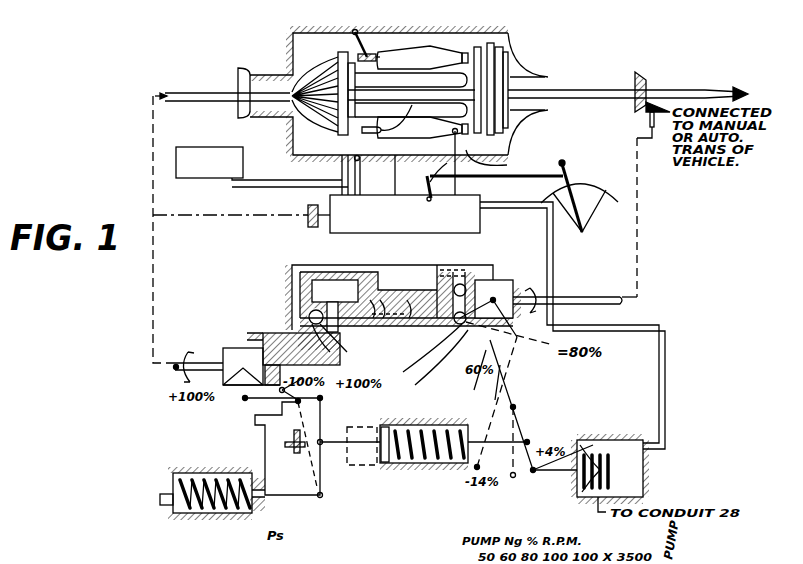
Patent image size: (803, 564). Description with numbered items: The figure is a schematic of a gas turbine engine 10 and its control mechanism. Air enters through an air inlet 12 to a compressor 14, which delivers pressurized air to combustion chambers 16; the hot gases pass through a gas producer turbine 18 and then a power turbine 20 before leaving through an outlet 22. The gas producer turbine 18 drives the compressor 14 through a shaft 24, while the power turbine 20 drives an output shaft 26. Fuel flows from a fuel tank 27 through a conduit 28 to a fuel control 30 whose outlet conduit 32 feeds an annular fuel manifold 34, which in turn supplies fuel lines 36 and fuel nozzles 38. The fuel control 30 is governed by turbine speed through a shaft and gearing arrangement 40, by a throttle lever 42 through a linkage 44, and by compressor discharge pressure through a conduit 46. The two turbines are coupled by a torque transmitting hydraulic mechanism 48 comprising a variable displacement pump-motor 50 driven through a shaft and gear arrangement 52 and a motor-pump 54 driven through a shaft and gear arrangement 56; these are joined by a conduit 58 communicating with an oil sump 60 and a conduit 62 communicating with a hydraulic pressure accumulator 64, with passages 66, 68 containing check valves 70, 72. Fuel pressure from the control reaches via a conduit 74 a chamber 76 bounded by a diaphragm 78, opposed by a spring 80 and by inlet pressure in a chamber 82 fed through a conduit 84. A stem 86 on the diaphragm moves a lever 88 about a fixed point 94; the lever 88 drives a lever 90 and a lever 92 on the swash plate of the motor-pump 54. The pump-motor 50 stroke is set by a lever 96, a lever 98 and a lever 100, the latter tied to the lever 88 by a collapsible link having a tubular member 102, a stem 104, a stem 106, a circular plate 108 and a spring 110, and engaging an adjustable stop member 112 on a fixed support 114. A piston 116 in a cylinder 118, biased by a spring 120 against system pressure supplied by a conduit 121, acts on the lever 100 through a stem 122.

The gas turbine engine 10 is at (286, 57).
The air inlet 12 is at (240, 90).
The compressor 14 is at (320, 85).
The combustion chambers 16 is at (418, 55).
The gas producer turbine 18 is at (493, 155).
The power turbine 20 is at (507, 140).
The outlet 22 is at (530, 80).
The shaft 24 is at (381, 132).
The shaft 26 is at (581, 98).
The fuel tank 27 is at (216, 147).
The conduit 28 is at (263, 180).
The fuel control 30 is at (392, 235).
The outlet conduit 32 is at (361, 181).
The annular fuel manifold 34 is at (355, 159).
The ignition lever 36 is at (369, 55).
The fuel nozzles 38 is at (381, 55).
The shaft and gearing arrangement 40 is at (153, 200).
The throttle lever 42 is at (572, 183).
The linkage 44 is at (521, 180).
The conduit 46 is at (458, 180).
The torque transmitting hydraulic mechanism 48 is at (216, 352).
The variable displacement hydraulic pump-motor 50 is at (228, 347).
The shaft and gear arrangement 52 is at (154, 282).
The hydraulic motor-pump 54 is at (500, 279).
The shaft and gear arrangement 56 is at (639, 235).
The conduit 58 is at (317, 265).
The oil sump 60 is at (405, 265).
The conduit 62 is at (412, 320).
The hydraulic pressure accumulator 64 is at (375, 320).
The passage 66 is at (336, 347).
The passage 68 is at (455, 280).
The check valve 70 is at (293, 337).
The check valve 72 is at (455, 324).
The conduit 74 is at (500, 265).
The chamber 76 is at (644, 474).
The diaphragm 78 is at (644, 496).
The spring 80 is at (592, 448).
The chamber 82 is at (573, 497).
The conduit 84 is at (593, 512).
The stem 86 is at (578, 483).
The lever 88 is at (525, 428).
The lever 90 is at (493, 361).
The lever 92 is at (435, 354).
The fixed point 94 is at (520, 408).
The lever 96 is at (243, 392).
The lever 98 is at (303, 398).
The lever 100 is at (320, 415).
The tubular member 102 is at (412, 464).
The stem 104 is at (478, 435).
The stem 106 is at (340, 470).
The circular plate 108 is at (385, 425).
The spring 110 is at (440, 428).
The adjustable stop member 112 is at (301, 445).
The fixed support 114 is at (293, 436).
The piston 116 is at (257, 514).
The cylinder 118 is at (186, 470).
The spring 120 is at (206, 513).
The conduit 121 is at (256, 458).
The stem 122 is at (302, 497).